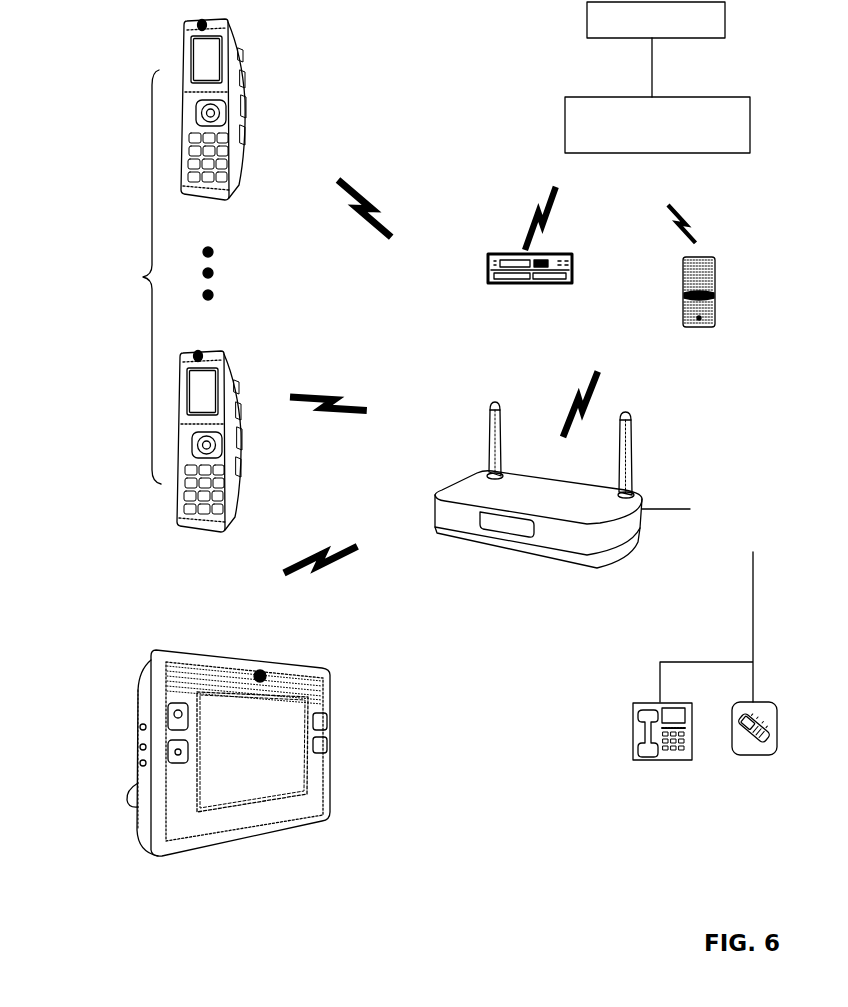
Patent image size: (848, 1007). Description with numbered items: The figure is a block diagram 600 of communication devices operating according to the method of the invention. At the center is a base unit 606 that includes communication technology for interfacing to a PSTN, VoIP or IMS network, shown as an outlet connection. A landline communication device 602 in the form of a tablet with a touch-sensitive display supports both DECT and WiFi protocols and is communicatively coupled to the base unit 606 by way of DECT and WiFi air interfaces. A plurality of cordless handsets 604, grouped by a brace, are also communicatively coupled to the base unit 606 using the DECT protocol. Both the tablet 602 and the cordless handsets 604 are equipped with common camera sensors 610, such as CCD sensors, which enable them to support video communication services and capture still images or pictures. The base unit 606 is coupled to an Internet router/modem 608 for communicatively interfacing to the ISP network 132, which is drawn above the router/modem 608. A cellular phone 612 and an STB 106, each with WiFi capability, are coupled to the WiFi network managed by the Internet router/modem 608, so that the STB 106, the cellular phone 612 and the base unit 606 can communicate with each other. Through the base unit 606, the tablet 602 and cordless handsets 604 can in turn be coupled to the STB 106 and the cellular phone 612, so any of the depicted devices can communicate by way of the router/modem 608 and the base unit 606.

The block diagram 600 is at (425, 473).
The ISP network 132 is at (712, 31).
The Internet router/modem 608 is at (738, 147).
The STB 106 is at (510, 278).
The cellular phone 612 is at (717, 277).
The cordless handsets 604 is at (233, 373).
The camera sensors 610 is at (203, 352).
The base unit 606 is at (597, 568).
The landline communication device 602 is at (160, 650).